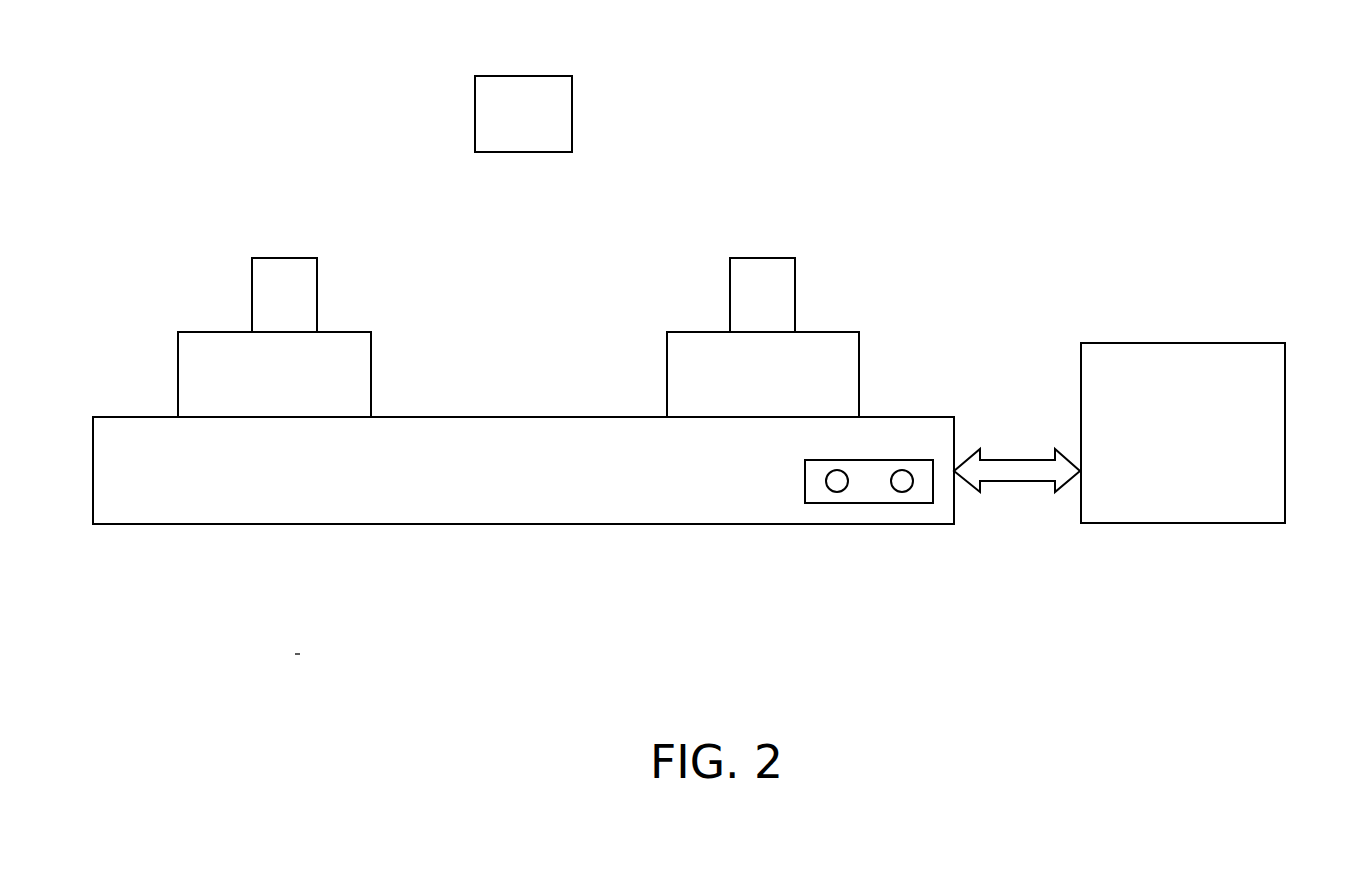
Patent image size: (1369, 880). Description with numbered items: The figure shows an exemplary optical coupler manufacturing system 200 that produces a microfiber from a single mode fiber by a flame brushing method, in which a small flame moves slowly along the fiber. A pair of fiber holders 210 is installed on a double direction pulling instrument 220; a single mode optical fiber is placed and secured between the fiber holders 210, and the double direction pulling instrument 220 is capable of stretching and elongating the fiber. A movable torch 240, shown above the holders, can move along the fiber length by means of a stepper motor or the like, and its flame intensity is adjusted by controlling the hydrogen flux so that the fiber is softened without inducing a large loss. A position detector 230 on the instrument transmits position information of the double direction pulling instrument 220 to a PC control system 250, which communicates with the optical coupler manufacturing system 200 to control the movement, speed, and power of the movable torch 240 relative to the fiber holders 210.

The optical coupler manufacturing system 200 is at (875, 258).
The fiber holders 210 is at (746, 296).
The double direction pulling instrument 220 is at (674, 383).
The position detector 230 is at (817, 480).
The movable torch 240 is at (533, 103).
The PC control system 250 is at (1194, 358).